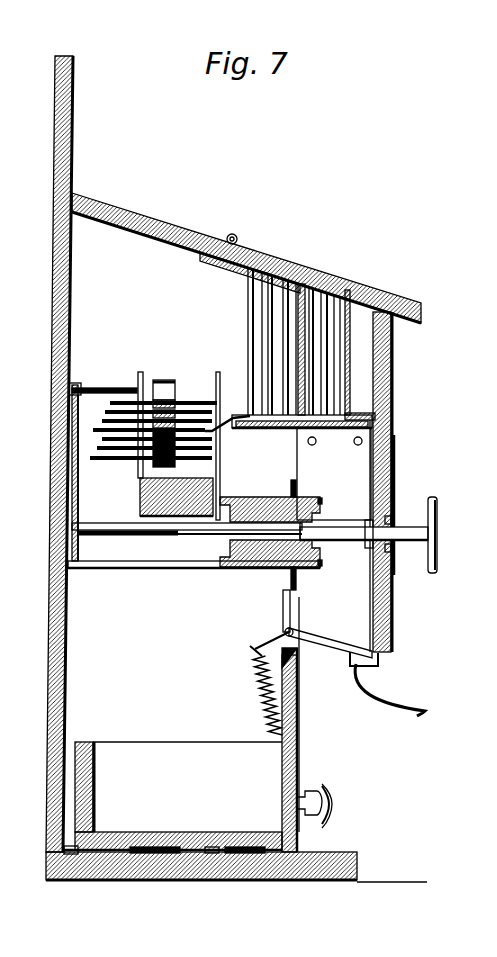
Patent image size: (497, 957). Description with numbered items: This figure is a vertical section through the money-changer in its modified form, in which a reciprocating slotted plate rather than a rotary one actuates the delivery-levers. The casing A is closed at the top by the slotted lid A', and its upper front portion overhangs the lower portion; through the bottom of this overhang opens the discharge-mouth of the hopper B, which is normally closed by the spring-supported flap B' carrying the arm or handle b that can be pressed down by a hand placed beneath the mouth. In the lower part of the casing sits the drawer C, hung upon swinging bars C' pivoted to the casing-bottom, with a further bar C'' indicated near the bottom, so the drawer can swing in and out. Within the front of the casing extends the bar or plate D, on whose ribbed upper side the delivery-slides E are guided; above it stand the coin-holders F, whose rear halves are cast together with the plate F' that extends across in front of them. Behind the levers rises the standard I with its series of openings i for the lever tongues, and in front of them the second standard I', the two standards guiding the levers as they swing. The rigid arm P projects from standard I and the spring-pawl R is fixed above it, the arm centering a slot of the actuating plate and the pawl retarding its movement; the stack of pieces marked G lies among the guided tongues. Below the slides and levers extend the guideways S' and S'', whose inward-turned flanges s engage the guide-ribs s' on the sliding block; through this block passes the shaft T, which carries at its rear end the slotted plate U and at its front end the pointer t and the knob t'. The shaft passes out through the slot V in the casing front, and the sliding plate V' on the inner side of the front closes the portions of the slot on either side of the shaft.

The casing A is at (216, 454).
The slotted lid A' is at (246, 258).
The coin-holders F is at (299, 341).
The plate F' is at (360, 407).
The delivery-slides E is at (288, 432).
The bar or plate D is at (324, 436).
The index arm or pointer t is at (401, 505).
The knob or handle t' is at (376, 535).
The shaft T is at (210, 536).
The guideways S' is at (270, 536).
The lower bearing block S'' is at (259, 564).
The ribs or flanges s is at (328, 535).
The guide-ribs s' is at (306, 534).
The slot V is at (387, 527).
The sliding plate V' is at (370, 549).
The plate U is at (81, 473).
The rigid arm P is at (117, 392).
The spring-pawl R is at (84, 383).
The standard I is at (140, 415).
The second standard I' is at (224, 446).
The stack of plates G is at (168, 400).
The openings i is at (149, 445).
The hopper B is at (311, 662).
The spring-supported flap B' is at (364, 666).
The arm or handle b is at (390, 699).
The drawer C is at (178, 796).
The swinging bars C' is at (236, 879).
The base rod C'' is at (172, 873).